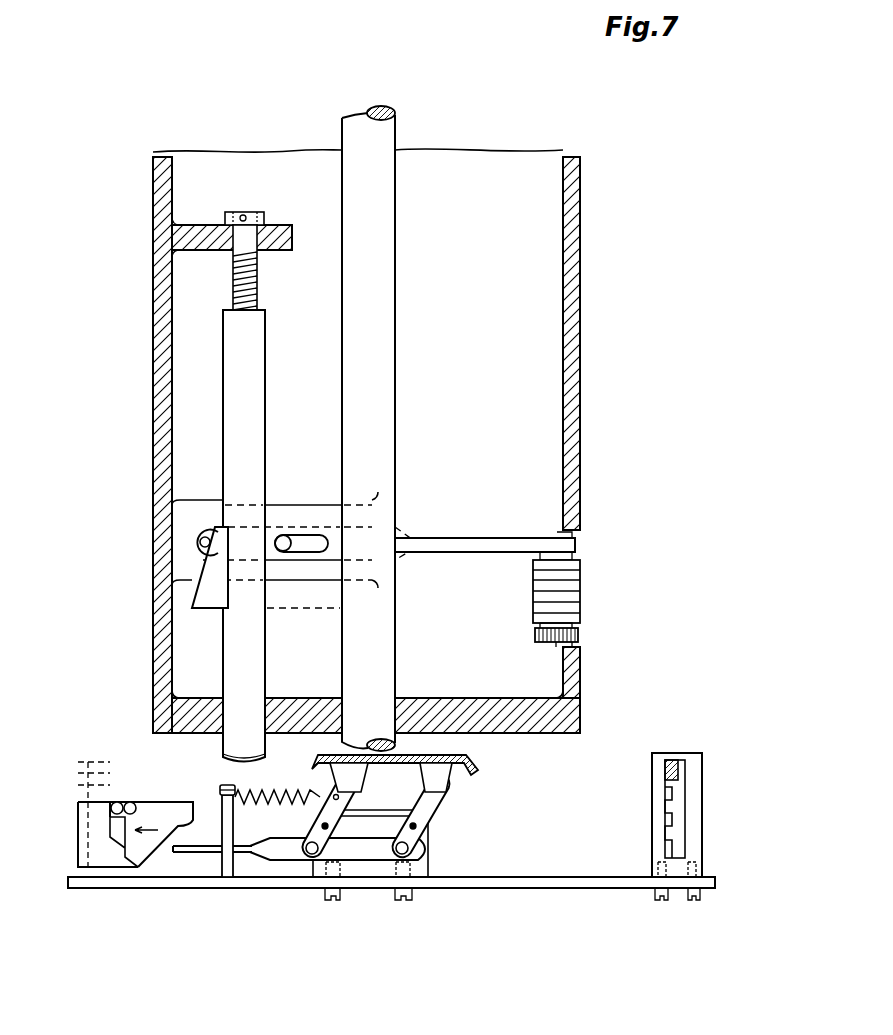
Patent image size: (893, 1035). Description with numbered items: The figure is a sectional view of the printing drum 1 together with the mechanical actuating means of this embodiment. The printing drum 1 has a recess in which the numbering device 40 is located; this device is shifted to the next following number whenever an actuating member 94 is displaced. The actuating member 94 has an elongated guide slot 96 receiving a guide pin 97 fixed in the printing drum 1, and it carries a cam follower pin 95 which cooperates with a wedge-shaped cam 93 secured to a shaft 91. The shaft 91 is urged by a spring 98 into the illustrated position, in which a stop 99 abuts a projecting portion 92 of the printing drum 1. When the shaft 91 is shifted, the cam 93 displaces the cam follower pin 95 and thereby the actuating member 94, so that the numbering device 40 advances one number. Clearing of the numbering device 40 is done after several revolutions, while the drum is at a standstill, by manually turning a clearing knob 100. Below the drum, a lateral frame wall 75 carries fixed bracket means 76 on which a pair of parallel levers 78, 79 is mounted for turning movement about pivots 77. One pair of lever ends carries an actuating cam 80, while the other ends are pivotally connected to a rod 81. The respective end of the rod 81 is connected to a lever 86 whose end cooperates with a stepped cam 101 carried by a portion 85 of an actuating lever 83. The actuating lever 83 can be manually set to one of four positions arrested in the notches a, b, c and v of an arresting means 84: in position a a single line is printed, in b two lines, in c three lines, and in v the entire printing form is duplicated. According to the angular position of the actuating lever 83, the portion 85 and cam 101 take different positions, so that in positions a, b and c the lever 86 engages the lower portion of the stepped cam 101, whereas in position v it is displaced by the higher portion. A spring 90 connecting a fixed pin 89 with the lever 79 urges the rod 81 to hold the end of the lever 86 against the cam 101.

The printing drum 1 is at (155, 375).
The numbering device 40 is at (582, 590).
The lateral frame wall 75 is at (572, 886).
The bracket means 76 is at (418, 862).
The pivots 77 is at (353, 838).
The lever 78 is at (431, 800).
The lever 79 is at (322, 862).
The actuating cam 80 is at (472, 772).
The rod 81 is at (195, 850).
The actuating lever 83 is at (672, 760).
The arresting means 84 is at (677, 862).
The portion of actuating lever 85 is at (80, 862).
The lever 86 is at (112, 801).
The fixed pin 89 is at (228, 872).
The spring 90 is at (277, 800).
The shaft 91 is at (236, 668).
The projecting portion 92 is at (240, 240).
The wedge-shaped cam 93 is at (205, 597).
The actuating member 94 is at (535, 545).
The cam follower pin 95 is at (203, 540).
The guide slot 96 is at (308, 538).
The guide pin 97 is at (283, 538).
The spring 98 is at (236, 292).
The stop 99 is at (236, 218).
The clearing knob 100 is at (580, 637).
The stepped cam 101 is at (120, 857).